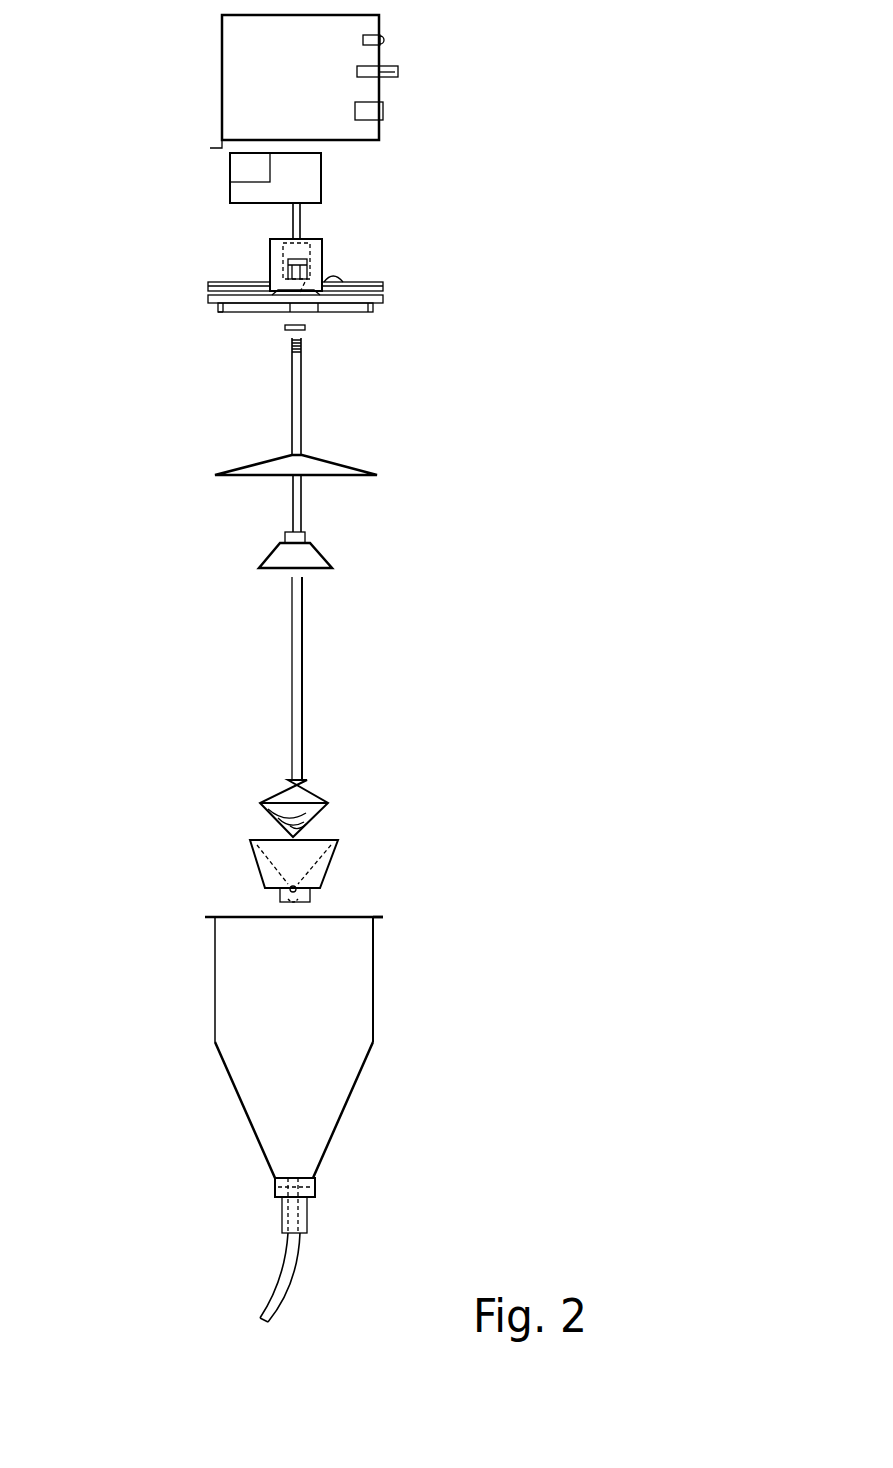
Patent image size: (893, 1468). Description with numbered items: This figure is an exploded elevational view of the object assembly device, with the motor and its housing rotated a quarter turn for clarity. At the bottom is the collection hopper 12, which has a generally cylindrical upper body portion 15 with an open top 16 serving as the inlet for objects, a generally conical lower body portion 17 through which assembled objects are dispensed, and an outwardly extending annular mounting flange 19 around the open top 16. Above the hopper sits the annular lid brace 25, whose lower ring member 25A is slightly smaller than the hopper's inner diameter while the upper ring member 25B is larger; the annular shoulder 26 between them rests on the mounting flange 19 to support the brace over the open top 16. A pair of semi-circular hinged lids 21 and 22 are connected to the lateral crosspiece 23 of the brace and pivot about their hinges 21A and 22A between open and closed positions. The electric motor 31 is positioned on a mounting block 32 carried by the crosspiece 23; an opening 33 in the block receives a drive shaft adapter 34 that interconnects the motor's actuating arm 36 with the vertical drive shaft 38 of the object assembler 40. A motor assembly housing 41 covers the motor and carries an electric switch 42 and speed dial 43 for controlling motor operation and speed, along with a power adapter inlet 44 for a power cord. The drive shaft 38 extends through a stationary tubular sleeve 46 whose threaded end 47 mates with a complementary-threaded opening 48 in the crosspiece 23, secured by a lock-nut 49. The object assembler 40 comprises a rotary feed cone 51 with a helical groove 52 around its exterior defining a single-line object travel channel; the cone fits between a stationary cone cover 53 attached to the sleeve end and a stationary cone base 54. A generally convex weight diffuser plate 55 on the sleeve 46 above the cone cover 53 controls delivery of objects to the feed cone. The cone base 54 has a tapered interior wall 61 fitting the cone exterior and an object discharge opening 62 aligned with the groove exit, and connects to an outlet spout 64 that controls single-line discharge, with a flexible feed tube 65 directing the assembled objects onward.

The collection hopper 12 is at (178, 1010).
The upper body portion 15 is at (352, 997).
The open top 16 is at (362, 915).
The lower body portion 17 is at (315, 1118).
The mounting flange 19 is at (383, 918).
The hinged lid 21 is at (223, 281).
The hinge 21A is at (275, 293).
The hinged lid 22 is at (380, 281).
The hinge 22A is at (343, 283).
The lateral crosspiece 23 is at (290, 300).
The annular lid brace 25 is at (180, 297).
The lower ring member 25A is at (374, 311).
The upper ring member 25B is at (384, 300).
The annular shoulder 26 is at (215, 312).
The electric motor 31 is at (230, 180).
The mounting block 32 is at (268, 267).
The opening 33 is at (322, 240).
The drive shaft adapter 34 is at (312, 262).
The actuating arm 36 is at (292, 218).
The vertical drive shaft 38 is at (302, 671).
The object assembler 40 is at (352, 787).
The motor assembly housing 41 is at (251, 84).
The electric switch 42 is at (386, 40).
The speed dial 43 is at (400, 72).
The power adapter inlet 44 is at (385, 112).
The tubular sleeve 46 is at (302, 508).
The threaded end 47 is at (302, 345).
The threaded opening 48 is at (300, 292).
The lock-nut 49 is at (285, 332).
The rotary feed cone 51 is at (277, 793).
The helical groove 52 is at (270, 822).
The cone cover 53 is at (305, 557).
The cone base 54 is at (272, 878).
The weight diffuser plate 55 is at (270, 470).
The tapered interior wall 61 is at (318, 845).
The object discharge opening 62 is at (300, 900).
The outlet spout 64 is at (308, 1213).
The flexible feed tube 65 is at (270, 1292).